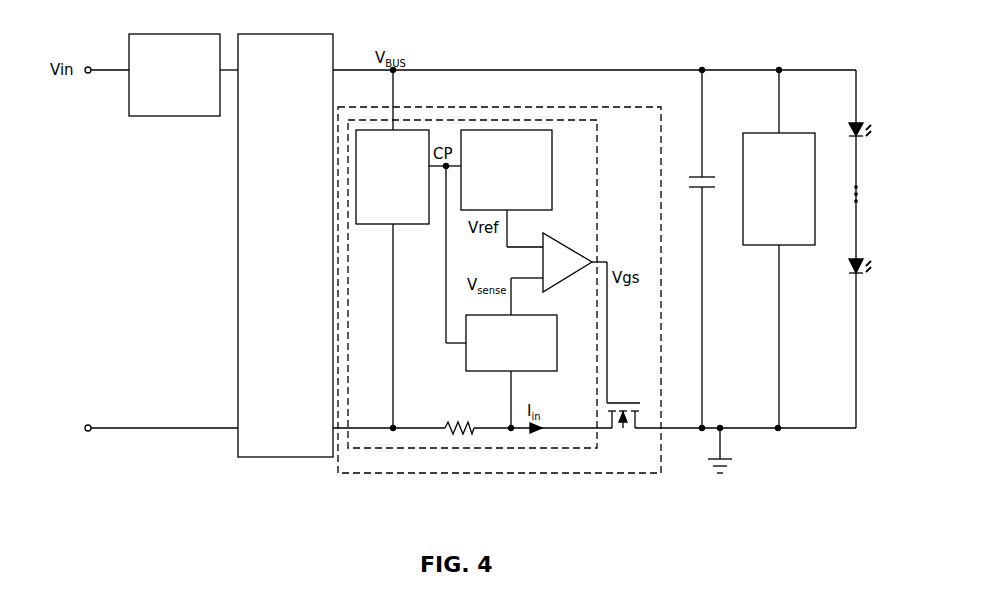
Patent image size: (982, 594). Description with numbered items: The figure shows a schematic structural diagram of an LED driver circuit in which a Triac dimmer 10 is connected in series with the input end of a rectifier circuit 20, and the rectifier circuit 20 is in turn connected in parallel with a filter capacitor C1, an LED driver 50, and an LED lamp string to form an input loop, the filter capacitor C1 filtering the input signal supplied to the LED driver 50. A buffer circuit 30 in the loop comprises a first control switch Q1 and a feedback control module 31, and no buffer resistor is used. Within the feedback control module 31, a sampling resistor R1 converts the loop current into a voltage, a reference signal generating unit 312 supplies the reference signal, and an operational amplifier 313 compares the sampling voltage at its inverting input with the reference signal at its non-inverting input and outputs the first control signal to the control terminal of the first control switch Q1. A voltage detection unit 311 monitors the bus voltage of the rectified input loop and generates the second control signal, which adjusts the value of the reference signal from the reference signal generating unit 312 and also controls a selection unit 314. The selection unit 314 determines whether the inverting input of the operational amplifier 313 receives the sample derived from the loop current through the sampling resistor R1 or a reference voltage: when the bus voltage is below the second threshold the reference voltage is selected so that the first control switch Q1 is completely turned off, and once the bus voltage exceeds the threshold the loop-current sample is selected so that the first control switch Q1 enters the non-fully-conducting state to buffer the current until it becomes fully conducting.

The Triac dimmer 10 is at (174, 75).
The rectifier circuit 20 is at (285, 245).
The buffer circuit 30 is at (413, 473).
The feedback control module 31 is at (593, 176).
The voltage detection unit 311 is at (392, 249).
The reference signal generating unit 312 is at (506, 170).
The operational amplifier 313 is at (578, 252).
The selection unit 314 is at (511, 371).
The LED driver 50 is at (779, 249).
The first control switch Q1 is at (623, 430).
The sampling resistor R1 is at (459, 416).
The filter capacitor C1 is at (691, 249).